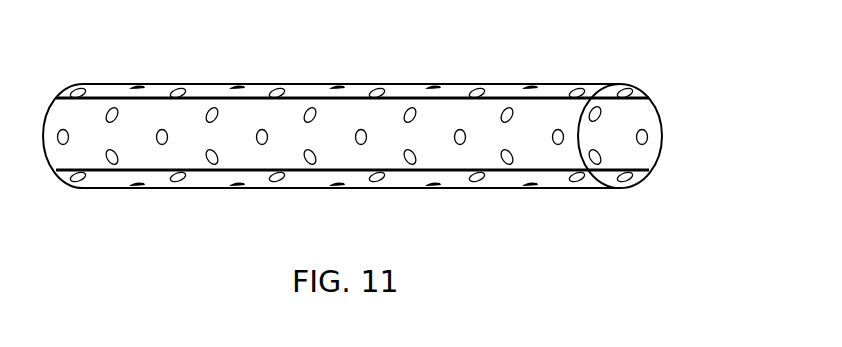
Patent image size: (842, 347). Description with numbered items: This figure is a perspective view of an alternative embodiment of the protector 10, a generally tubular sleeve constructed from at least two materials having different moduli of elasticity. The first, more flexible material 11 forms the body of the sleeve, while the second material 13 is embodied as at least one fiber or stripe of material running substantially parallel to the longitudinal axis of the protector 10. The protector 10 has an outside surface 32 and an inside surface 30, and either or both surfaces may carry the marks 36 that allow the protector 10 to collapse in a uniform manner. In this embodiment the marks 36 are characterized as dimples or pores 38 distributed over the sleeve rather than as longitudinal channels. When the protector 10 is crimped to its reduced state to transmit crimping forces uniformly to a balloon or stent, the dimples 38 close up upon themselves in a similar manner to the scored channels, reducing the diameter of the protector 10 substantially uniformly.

The protector 10 is at (623, 205).
The first material 11 is at (398, 158).
The second material 13 is at (310, 98).
The inside surface 30 is at (660, 106).
The outside surface 32 is at (404, 85).
The scoring marks 36 is at (218, 168).
The dimples or pores 38 is at (462, 140).